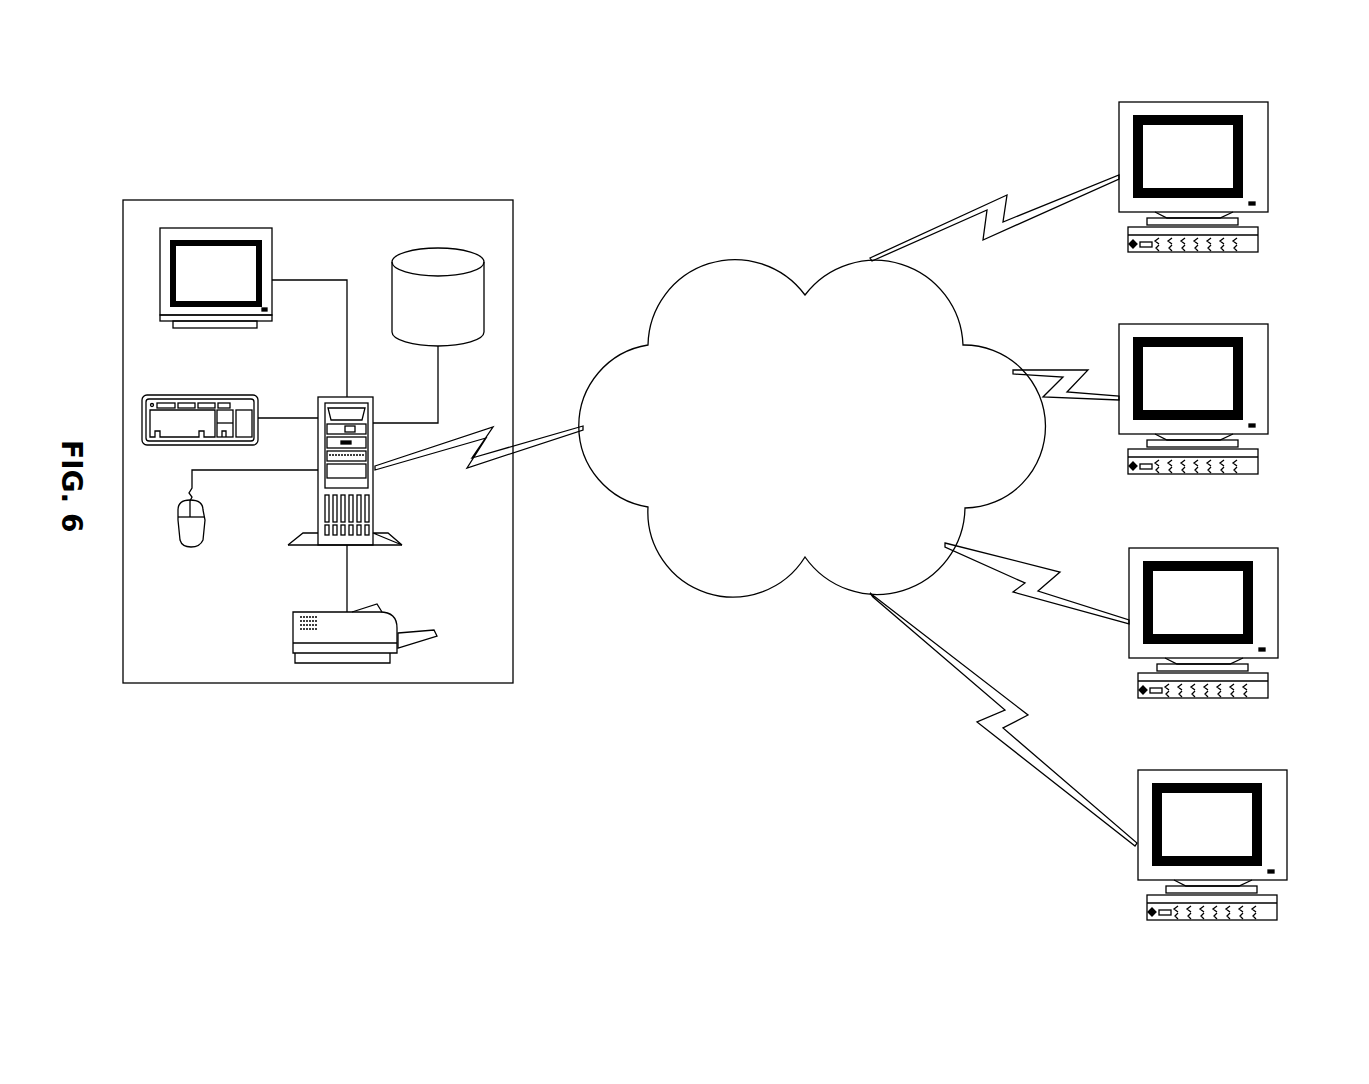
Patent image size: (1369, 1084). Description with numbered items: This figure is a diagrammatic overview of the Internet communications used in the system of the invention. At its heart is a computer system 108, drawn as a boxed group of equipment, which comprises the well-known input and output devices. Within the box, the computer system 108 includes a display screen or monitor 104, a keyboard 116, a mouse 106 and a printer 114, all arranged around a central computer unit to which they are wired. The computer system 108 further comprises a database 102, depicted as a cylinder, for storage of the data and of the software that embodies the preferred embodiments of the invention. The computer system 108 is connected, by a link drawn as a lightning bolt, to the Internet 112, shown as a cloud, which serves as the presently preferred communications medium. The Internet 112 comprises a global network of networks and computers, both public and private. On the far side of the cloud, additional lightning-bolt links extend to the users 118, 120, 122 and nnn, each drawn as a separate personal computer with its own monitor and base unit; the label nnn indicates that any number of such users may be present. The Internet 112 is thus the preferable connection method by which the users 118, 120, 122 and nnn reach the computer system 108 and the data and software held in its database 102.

The database 102 is at (492, 268).
The display screen or monitor 104 is at (278, 222).
The mouse 106 is at (172, 538).
The computer system 108 is at (155, 192).
The Internet 112 is at (735, 364).
The printer 114 is at (397, 664).
The keyboard 116 is at (163, 387).
The user 118 is at (1275, 172).
The user 120 is at (1277, 393).
The user 122 is at (1286, 615).
The user nnn is at (1297, 837).